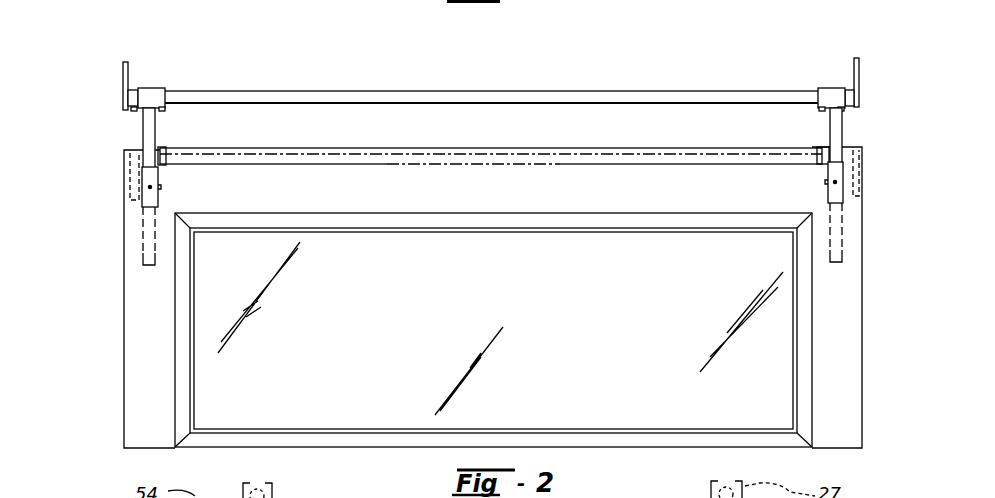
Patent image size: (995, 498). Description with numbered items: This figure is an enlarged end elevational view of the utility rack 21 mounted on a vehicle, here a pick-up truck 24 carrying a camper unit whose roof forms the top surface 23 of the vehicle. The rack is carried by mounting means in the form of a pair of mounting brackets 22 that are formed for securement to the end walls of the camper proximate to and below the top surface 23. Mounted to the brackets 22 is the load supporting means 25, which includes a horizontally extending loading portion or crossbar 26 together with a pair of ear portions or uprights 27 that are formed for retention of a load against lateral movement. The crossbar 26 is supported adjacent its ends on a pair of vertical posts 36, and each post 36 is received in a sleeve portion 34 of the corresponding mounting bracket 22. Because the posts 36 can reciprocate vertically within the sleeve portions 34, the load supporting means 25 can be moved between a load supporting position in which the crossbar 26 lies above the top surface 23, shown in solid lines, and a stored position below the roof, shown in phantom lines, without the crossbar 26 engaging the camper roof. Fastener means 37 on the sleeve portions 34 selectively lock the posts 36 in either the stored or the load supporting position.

The utility rack 21 is at (127, 36).
The mounting brackets 22 is at (160, 200).
The top surface 23 is at (432, 148).
The pick-up truck 24 is at (124, 346).
The load supporting means 25 is at (138, 127).
The crossbar 26 is at (317, 150).
The uprights 27 is at (123, 78).
The sleeve portions 34 is at (142, 199).
The posts 36 is at (143, 138).
The fastener means 37 is at (159, 187).